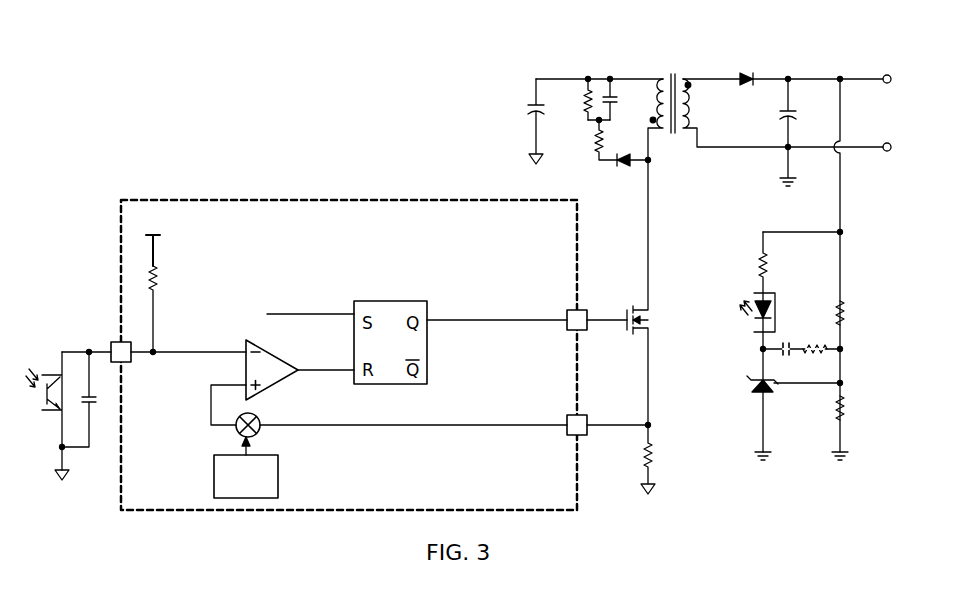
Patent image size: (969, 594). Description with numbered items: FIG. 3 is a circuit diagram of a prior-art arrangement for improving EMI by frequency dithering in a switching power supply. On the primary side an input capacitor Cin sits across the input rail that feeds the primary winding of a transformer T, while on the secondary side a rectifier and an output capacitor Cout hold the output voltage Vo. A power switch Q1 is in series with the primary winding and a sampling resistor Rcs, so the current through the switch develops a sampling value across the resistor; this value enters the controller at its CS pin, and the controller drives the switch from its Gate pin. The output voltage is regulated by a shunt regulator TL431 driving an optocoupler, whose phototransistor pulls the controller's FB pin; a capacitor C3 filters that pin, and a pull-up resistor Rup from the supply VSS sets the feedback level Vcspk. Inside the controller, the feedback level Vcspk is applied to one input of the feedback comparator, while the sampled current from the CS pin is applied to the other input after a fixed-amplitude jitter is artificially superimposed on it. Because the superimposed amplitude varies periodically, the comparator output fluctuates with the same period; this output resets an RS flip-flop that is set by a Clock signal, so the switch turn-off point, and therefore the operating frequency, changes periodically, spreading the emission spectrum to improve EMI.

The input capacitor Cin is at (528, 121).
The transformer T is at (765, 109).
The output capacitor Cout is at (805, 132).
The output voltage Vo is at (862, 109).
The power switch transistor Q1 is at (652, 292).
The current sense resistor Rcs is at (660, 459).
The gate pin Gate is at (597, 308).
The current sense pin CS is at (607, 415).
The feedback pin FB is at (96, 339).
The supply voltage VSS is at (151, 241).
The pull-up resistor Rup is at (168, 309).
The peak current threshold voltage Vcspk is at (188, 343).
The feedback capacitor C3 is at (87, 399).
The clock signal Clock is at (310, 303).
The shunt regulator TL431 is at (795, 394).